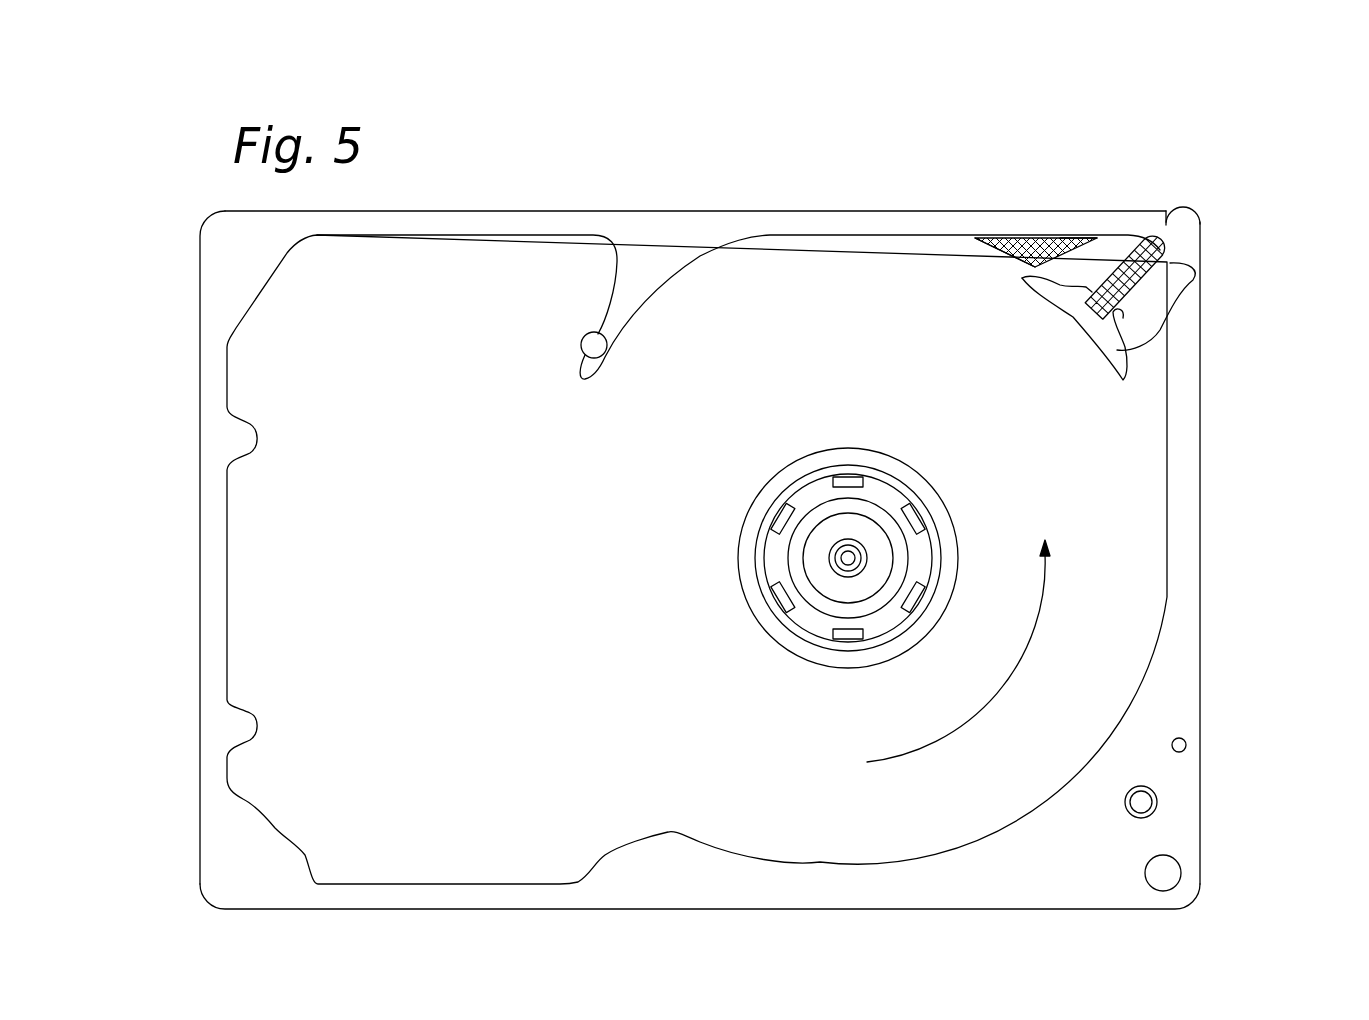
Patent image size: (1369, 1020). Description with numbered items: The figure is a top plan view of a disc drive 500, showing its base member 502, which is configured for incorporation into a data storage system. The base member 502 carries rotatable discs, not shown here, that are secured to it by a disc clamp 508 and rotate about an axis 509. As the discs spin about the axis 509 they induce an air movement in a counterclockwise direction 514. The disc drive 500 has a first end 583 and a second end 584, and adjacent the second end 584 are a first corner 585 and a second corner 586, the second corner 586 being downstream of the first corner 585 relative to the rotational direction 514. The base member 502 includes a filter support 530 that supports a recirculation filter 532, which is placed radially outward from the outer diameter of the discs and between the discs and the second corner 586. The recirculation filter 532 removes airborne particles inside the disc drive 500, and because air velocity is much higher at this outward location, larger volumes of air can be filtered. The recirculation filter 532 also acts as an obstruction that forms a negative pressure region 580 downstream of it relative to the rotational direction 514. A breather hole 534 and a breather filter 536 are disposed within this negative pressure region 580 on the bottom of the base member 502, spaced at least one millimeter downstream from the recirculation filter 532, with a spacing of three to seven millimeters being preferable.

The disc drive 500 is at (1245, 156).
The base member 502 is at (1183, 663).
The disc clamp 508 is at (767, 618).
The axis 509 is at (846, 570).
The counterclockwise direction 514 is at (1028, 655).
The filter support 530 is at (1167, 264).
The recirculation filter 532 is at (1178, 205).
The breather hole 534 is at (1038, 246).
The breather filter 536 is at (1022, 247).
The negative pressure region 580 is at (1103, 236).
The first end 583 is at (200, 527).
The second end 584 is at (1200, 509).
The first corner 585 is at (1200, 893).
The second corner 586 is at (1200, 227).